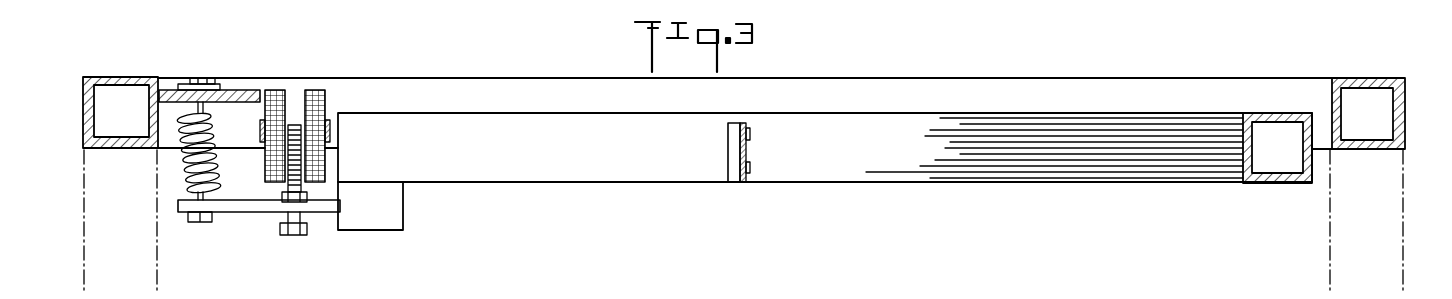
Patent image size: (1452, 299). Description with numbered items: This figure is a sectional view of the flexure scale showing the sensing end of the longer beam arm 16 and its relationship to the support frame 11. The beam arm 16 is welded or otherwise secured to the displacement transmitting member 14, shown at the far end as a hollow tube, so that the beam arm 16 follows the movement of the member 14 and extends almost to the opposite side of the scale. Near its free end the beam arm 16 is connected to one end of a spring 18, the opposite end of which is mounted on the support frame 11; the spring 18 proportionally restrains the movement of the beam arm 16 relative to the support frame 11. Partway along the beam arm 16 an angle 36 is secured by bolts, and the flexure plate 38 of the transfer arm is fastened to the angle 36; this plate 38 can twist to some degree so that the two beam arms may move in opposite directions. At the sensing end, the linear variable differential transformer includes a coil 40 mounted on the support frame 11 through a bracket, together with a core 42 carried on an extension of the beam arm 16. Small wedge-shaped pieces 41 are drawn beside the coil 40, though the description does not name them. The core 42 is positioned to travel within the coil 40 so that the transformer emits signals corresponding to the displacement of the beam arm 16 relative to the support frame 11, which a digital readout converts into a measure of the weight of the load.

The support frame 11 is at (130, 77).
The displacement transmitting member 14 is at (1272, 175).
The beam arm 16 is at (478, 172).
The spring 18 is at (183, 173).
The angle 36 is at (728, 152).
The flexure plate 38 is at (747, 150).
The coil 40 is at (322, 95).
The wedge 41 is at (258, 131).
The core 42 is at (285, 182).